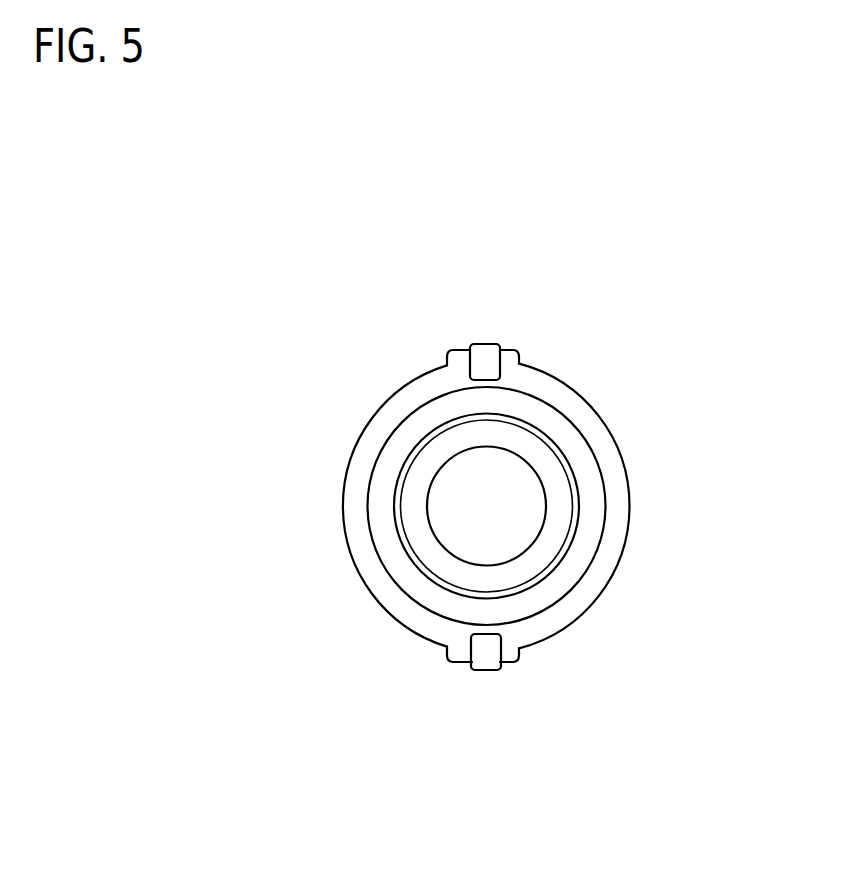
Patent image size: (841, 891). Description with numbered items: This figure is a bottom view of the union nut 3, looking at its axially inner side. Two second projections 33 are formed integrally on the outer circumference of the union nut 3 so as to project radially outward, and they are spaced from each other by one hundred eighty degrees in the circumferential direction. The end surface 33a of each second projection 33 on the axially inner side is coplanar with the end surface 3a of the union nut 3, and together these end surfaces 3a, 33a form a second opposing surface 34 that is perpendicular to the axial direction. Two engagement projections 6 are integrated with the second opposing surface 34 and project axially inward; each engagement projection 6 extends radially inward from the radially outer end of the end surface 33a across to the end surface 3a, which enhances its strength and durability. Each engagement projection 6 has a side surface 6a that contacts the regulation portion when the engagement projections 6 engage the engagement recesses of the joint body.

The union nut 3 is at (618, 406).
The end surface of the union nut 3a is at (378, 423).
The engagement projection 6 is at (504, 357).
The side surface 6a is at (447, 369).
The second projection 33 is at (461, 342).
The end surface of the second projection 33a is at (461, 357).
The second opposing surface 34 is at (248, 288).